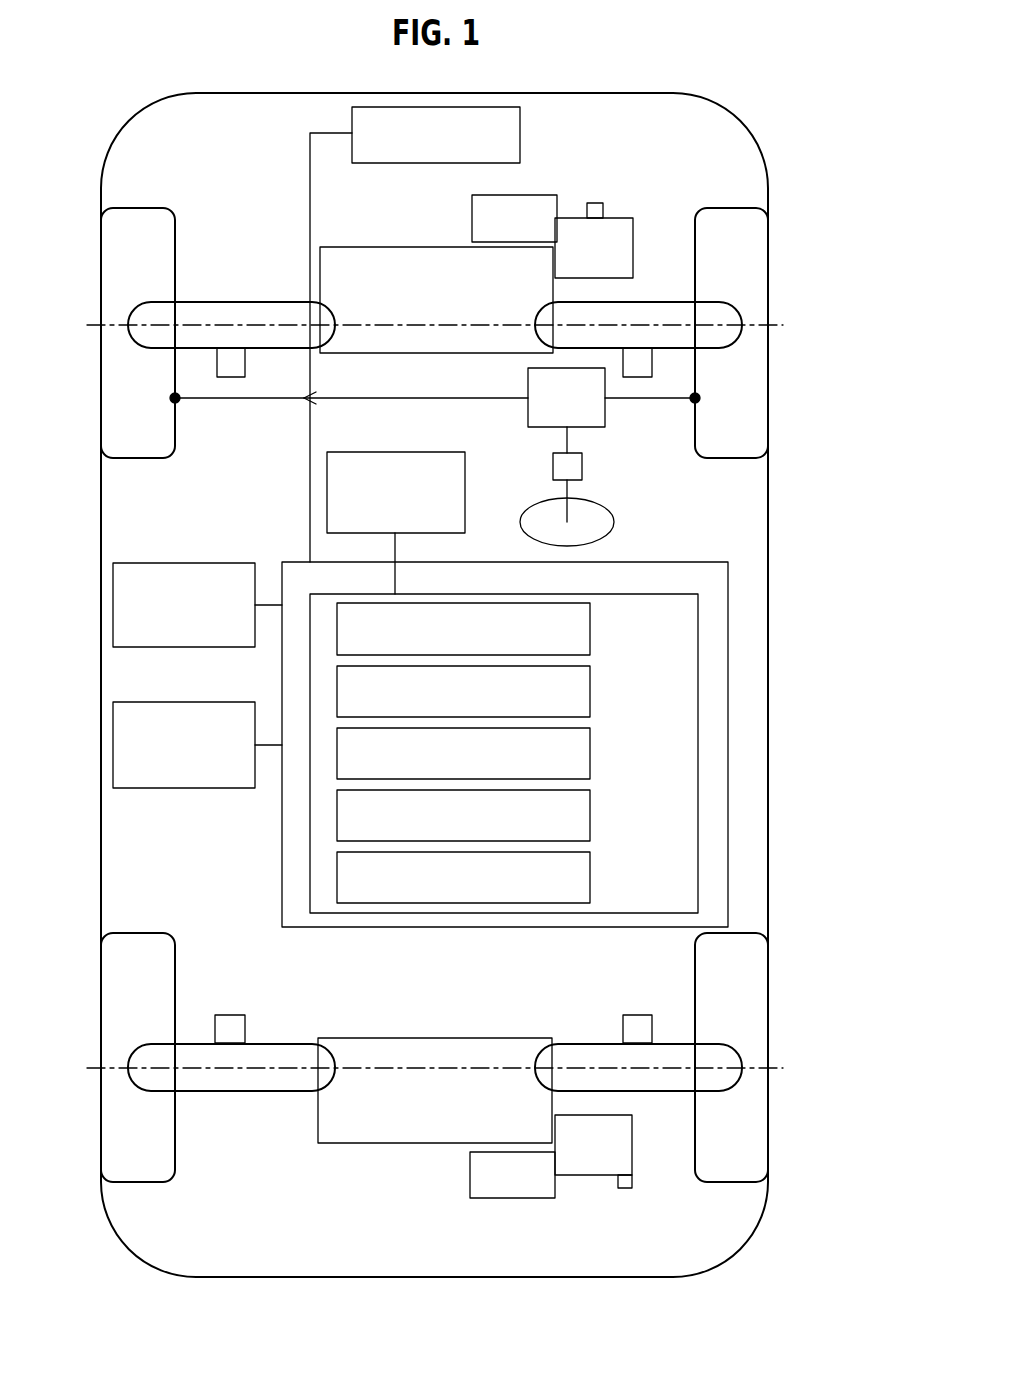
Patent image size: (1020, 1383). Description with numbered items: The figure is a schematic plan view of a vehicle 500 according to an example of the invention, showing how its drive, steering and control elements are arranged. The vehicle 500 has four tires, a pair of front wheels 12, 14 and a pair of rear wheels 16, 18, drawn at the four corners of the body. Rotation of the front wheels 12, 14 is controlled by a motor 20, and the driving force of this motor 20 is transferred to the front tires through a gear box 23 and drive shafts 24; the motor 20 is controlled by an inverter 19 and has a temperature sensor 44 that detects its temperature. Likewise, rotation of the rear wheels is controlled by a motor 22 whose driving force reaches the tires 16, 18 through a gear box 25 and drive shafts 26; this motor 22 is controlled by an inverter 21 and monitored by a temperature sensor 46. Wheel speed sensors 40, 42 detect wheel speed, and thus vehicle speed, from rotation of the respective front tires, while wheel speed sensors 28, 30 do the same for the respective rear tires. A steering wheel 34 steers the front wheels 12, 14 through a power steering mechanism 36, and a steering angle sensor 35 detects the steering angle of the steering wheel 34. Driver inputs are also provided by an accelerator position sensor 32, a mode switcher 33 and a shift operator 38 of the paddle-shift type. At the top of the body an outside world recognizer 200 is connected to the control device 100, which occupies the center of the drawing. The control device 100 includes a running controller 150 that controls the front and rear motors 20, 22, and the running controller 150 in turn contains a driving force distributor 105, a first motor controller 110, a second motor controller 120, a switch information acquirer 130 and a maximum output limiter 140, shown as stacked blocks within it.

The vehicle 500 is at (640, 1343).
The tire (front wheel) 12 is at (110, 268).
The tire (front wheel) 14 is at (760, 267).
The tire (rear wheel) 16 is at (110, 1138).
The tire (rear wheel) 18 is at (760, 1122).
The inverter 19 is at (541, 195).
The motor 20 is at (625, 218).
The inverter 21 is at (512, 1200).
The motor 22 is at (578, 1178).
The gear box 23 is at (433, 247).
The drive shafts 24 is at (229, 300).
The gear box 25 is at (433, 1037).
The drive shafts 26 is at (232, 1095).
The wheel speed sensor 28 is at (230, 1013).
The wheel speed sensor 30 is at (635, 1013).
The accelerator position sensor 32 is at (395, 452).
The mode switcher 33 is at (180, 563).
The steering wheel 34 is at (614, 520).
The steering angle sensor 35 is at (582, 466).
The power steering mechanism 36 is at (605, 410).
The shift operator (paddle shift) 38 is at (180, 702).
The wheel speed sensor 40 is at (217, 362).
The wheel speed sensor 42 is at (652, 362).
The temperature sensor 44 is at (593, 203).
The temperature sensor 46 is at (624, 1192).
The control device 100 is at (640, 562).
The driving force distributor 105 is at (590, 628).
The first motor controller 110 is at (590, 690).
The second motor controller 120 is at (590, 752).
The switch information acquirer 130 is at (590, 813).
The maximum output limiter 140 is at (590, 874).
The running controller 150 is at (610, 594).
The outside world recognizer 200 is at (520, 122).